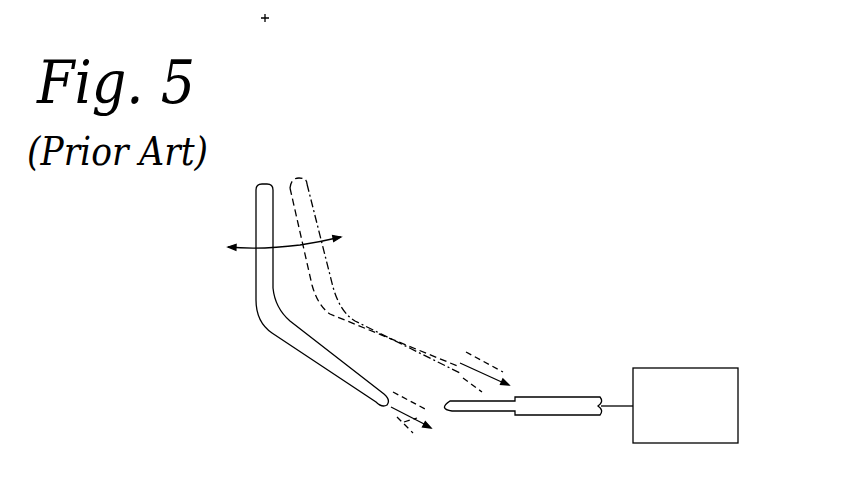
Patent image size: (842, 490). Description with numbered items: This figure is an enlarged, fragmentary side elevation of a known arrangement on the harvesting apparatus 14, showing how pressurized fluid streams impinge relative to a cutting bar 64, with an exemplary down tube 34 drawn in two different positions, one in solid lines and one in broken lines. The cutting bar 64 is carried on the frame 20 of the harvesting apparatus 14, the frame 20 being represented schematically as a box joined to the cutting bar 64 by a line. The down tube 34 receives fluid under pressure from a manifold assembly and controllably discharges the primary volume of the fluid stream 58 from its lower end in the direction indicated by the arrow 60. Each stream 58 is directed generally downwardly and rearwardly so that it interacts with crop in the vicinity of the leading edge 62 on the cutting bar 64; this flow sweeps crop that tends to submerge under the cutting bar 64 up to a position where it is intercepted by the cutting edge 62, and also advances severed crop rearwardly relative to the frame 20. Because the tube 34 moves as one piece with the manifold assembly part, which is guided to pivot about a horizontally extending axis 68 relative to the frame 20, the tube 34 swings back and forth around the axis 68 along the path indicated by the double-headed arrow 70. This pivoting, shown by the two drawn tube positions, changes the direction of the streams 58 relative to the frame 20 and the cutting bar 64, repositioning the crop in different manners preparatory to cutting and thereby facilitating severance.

The harvesting apparatus 14 is at (538, 220).
The frame 20 is at (670, 432).
The down tube 34 is at (263, 312).
The fluid stream 58 is at (386, 433).
The arrow 60 is at (408, 422).
The leading edge 62 is at (445, 411).
The cutting bar 64 is at (492, 400).
The horizontally extending axis 68 is at (268, 21).
The double-headed arrow 70 is at (288, 245).